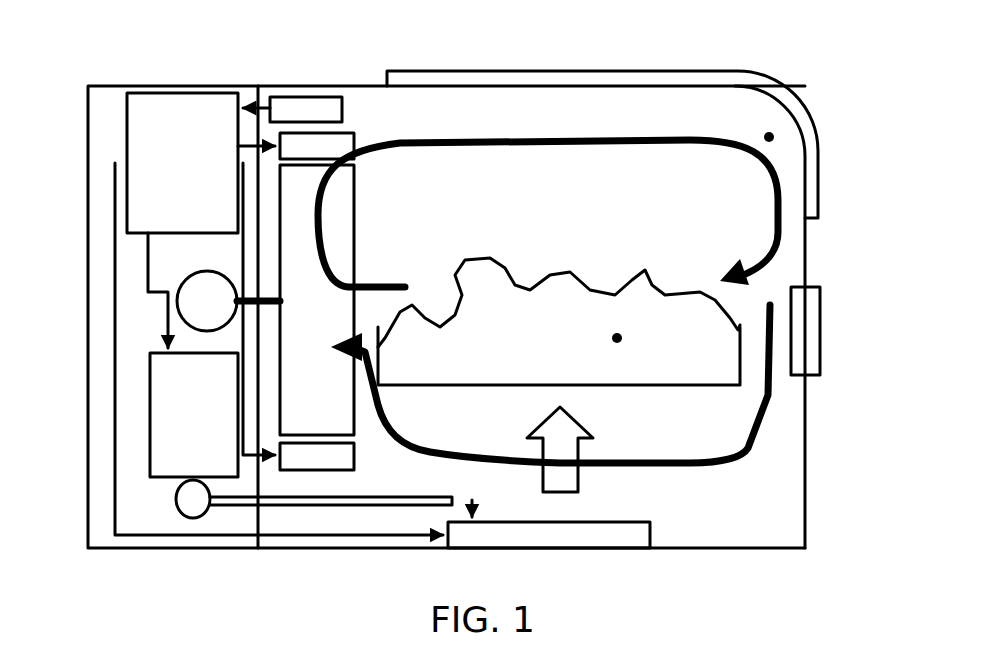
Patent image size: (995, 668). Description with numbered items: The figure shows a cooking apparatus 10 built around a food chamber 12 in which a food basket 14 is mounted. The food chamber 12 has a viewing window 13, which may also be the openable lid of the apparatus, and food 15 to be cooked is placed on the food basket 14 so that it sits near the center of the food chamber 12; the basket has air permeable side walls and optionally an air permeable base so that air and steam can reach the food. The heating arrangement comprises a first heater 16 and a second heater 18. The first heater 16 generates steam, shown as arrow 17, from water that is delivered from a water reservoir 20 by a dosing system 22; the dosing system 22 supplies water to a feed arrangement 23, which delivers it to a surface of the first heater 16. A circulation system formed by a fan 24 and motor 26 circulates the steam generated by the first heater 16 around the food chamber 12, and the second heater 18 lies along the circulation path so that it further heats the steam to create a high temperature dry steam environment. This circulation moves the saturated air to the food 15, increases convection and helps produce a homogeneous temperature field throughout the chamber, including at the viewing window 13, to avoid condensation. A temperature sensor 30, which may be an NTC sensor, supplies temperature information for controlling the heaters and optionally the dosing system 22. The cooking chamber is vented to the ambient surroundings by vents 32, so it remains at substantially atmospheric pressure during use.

The cooking apparatus 10 is at (323, 50).
The food chamber 12 is at (769, 137).
The viewing window 13 is at (640, 71).
The food basket 14 is at (470, 388).
The food 15 is at (617, 338).
The first heater 16 is at (652, 530).
The steam 17 is at (596, 430).
The second heater 18 is at (354, 140).
The water reservoir 20 is at (150, 383).
The dosing system 22 is at (176, 498).
The feed arrangement 23 is at (430, 492).
The fan 24 is at (127, 120).
The motor 26 is at (185, 283).
The temperature sensor 30 is at (283, 97).
The vents 32 is at (820, 330).